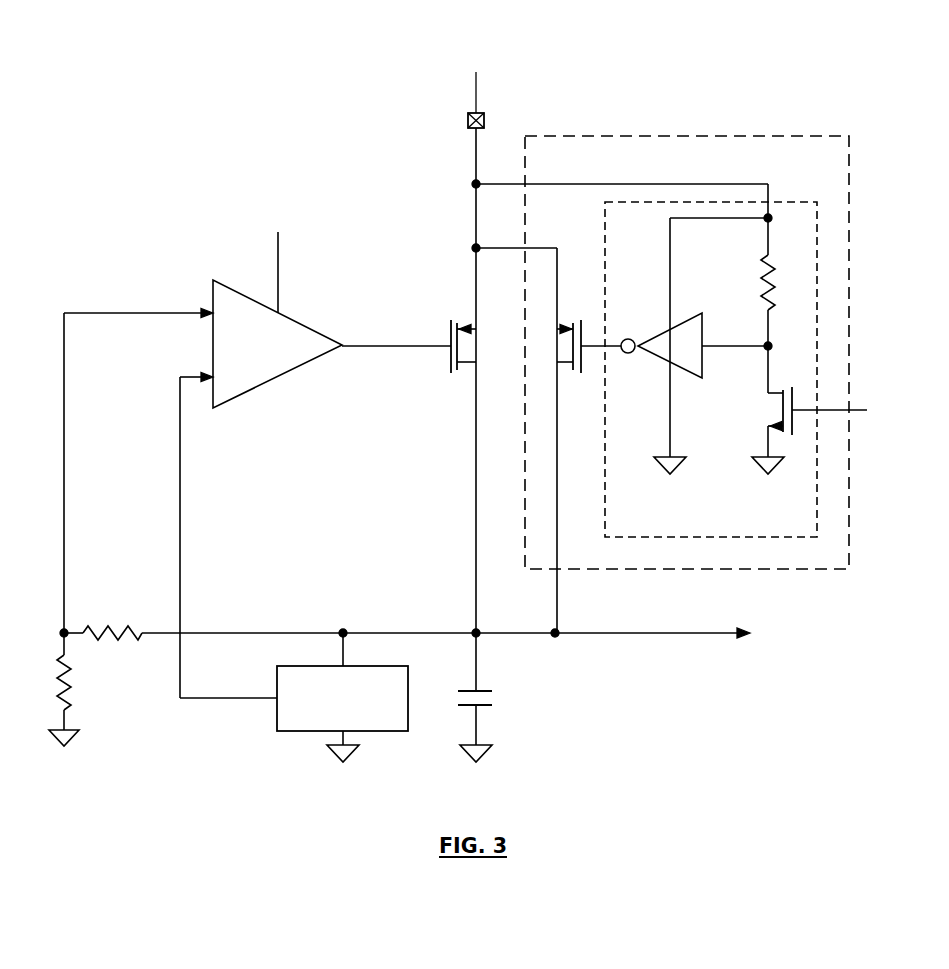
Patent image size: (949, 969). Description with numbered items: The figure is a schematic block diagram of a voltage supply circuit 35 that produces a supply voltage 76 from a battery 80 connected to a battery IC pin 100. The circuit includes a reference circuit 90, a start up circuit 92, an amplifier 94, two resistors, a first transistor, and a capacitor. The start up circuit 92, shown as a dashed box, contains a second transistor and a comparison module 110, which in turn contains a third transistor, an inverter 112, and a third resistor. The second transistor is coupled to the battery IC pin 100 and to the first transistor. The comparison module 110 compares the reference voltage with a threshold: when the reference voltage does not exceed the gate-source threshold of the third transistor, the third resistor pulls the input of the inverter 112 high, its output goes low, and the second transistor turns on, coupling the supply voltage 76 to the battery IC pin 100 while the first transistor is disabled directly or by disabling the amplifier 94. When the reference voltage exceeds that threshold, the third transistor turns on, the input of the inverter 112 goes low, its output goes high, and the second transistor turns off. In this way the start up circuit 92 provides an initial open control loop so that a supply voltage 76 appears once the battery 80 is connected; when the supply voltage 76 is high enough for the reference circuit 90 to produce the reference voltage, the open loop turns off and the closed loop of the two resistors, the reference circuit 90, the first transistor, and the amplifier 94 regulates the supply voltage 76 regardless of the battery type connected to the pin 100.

The voltage supply circuit 35 is at (482, 465).
The supply voltage 76 is at (865, 658).
The battery 80 is at (525, 66).
The reference circuit 90 is at (385, 720).
The start up circuit 92 is at (770, 166).
The amplifier 94 is at (293, 355).
The battery IC pin 100 is at (450, 131).
The comparison module 110 is at (760, 369).
The inverter 112 is at (695, 355).